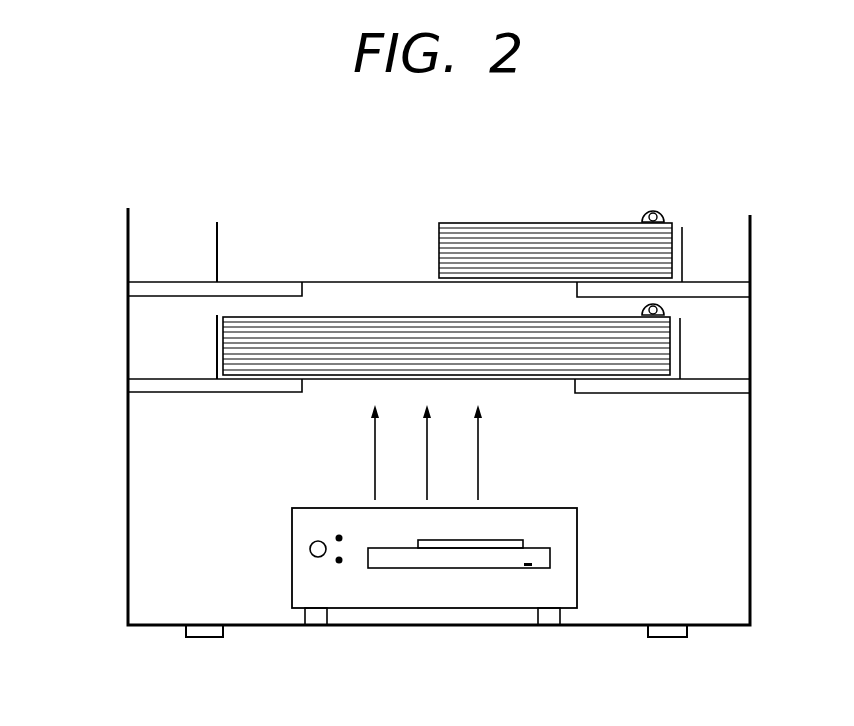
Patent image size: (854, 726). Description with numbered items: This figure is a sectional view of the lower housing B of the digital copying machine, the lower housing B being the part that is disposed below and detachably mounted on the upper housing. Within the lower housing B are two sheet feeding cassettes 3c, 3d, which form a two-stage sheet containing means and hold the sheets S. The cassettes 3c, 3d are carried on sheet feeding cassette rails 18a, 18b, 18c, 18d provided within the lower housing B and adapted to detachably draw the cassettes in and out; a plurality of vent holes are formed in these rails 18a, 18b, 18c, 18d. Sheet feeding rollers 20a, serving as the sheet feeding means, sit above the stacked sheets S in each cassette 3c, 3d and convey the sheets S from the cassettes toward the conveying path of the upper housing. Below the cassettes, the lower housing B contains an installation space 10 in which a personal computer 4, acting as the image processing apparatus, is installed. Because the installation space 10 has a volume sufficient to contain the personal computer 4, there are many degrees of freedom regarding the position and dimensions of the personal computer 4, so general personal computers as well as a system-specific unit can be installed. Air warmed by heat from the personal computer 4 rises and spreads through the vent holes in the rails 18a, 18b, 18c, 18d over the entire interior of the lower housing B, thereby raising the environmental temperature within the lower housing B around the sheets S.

The lower housing B is at (760, 196).
The installation space 10 is at (143, 519).
The sheet feeding cassette rail 18a is at (190, 393).
The sheet feeding cassette rail 18b is at (669, 394).
The sheet feeding cassette rail 18c is at (158, 296).
The sheet feeding cassette rail 18d is at (710, 283).
The sheet feeding cassette 3c is at (216, 232).
The sheet feeding cassette 3d is at (216, 344).
The sheets S is at (438, 227).
The sheet feeding roller 20a is at (655, 210).
The personal computer 4 is at (426, 610).